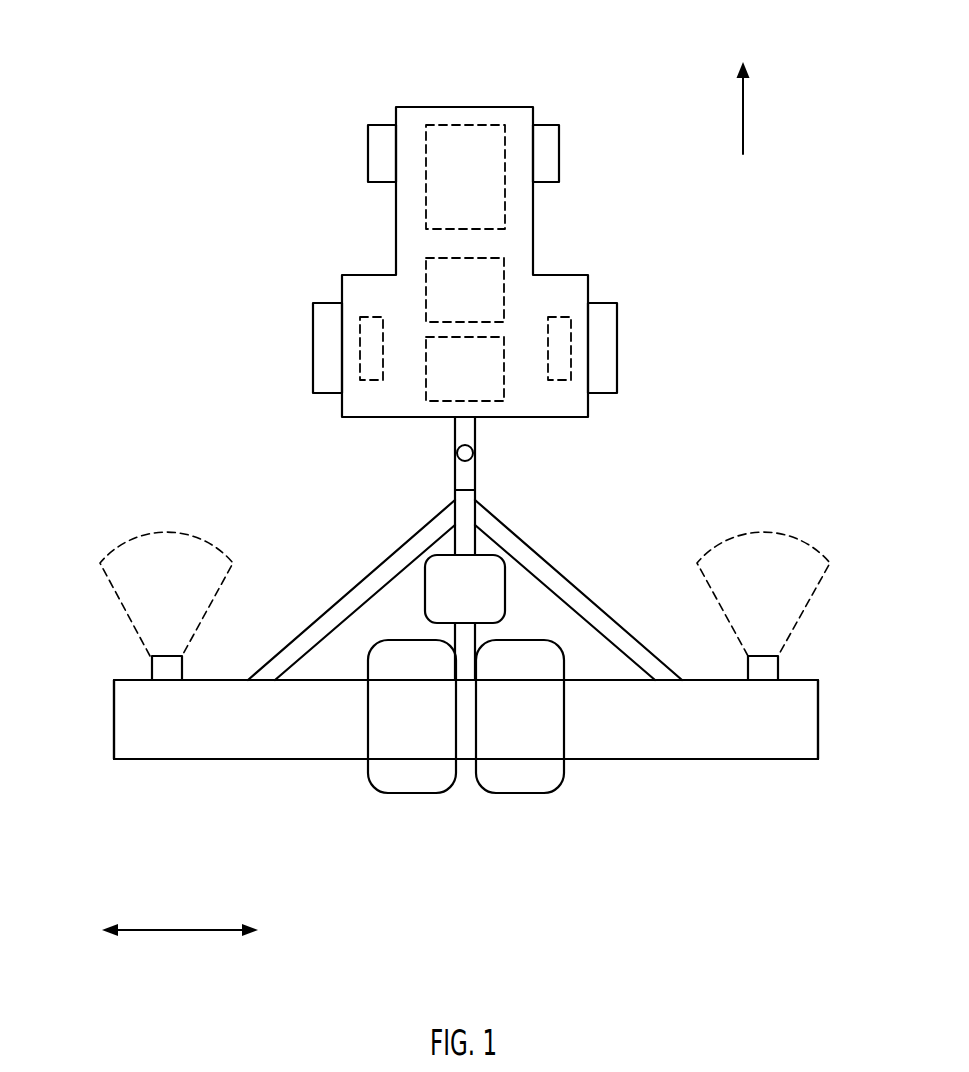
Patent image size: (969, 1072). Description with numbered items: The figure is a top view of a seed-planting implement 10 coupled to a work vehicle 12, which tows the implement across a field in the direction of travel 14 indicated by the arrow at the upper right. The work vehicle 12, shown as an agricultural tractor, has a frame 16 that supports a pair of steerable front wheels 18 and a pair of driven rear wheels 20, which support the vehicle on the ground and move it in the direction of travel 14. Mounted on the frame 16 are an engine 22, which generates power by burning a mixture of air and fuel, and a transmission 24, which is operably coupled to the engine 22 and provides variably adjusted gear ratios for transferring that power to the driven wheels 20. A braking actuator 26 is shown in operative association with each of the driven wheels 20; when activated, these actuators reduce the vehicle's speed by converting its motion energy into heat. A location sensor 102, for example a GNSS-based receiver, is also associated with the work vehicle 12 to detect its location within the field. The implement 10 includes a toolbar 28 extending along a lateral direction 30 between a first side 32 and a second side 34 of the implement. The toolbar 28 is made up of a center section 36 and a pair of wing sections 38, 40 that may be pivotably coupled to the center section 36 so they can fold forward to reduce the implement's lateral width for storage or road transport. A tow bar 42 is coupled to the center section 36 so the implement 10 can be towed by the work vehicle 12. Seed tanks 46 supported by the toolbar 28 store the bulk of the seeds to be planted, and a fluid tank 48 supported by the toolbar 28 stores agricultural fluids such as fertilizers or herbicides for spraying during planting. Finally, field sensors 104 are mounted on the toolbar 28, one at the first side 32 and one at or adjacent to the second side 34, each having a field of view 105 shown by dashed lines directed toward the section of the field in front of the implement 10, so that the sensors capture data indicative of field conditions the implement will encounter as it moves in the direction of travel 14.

The seed-planting implement 10 is at (288, 528).
The work vehicle 12 is at (192, 163).
The direction of travel 14 is at (745, 112).
The frame 16 is at (396, 227).
The steerable front wheels 18 is at (368, 155).
The driven rear wheels 20 is at (313, 345).
The engine 22 is at (453, 124).
The transmission 24 is at (505, 272).
The braking actuators 26 is at (368, 316).
The toolbar 28 is at (318, 770).
The lateral direction 30 is at (183, 932).
The first side 32 is at (92, 730).
The second side 34 is at (856, 730).
The center section 36 is at (475, 545).
The wing section 38 is at (182, 760).
The wing section 40 is at (661, 760).
The tow bar 42 is at (455, 488).
The seed tanks 46 is at (418, 793).
The fluid tank 48 is at (505, 600).
The location sensor 102 is at (505, 377).
The field sensors 104 is at (182, 672).
The field of view 105 is at (162, 532).